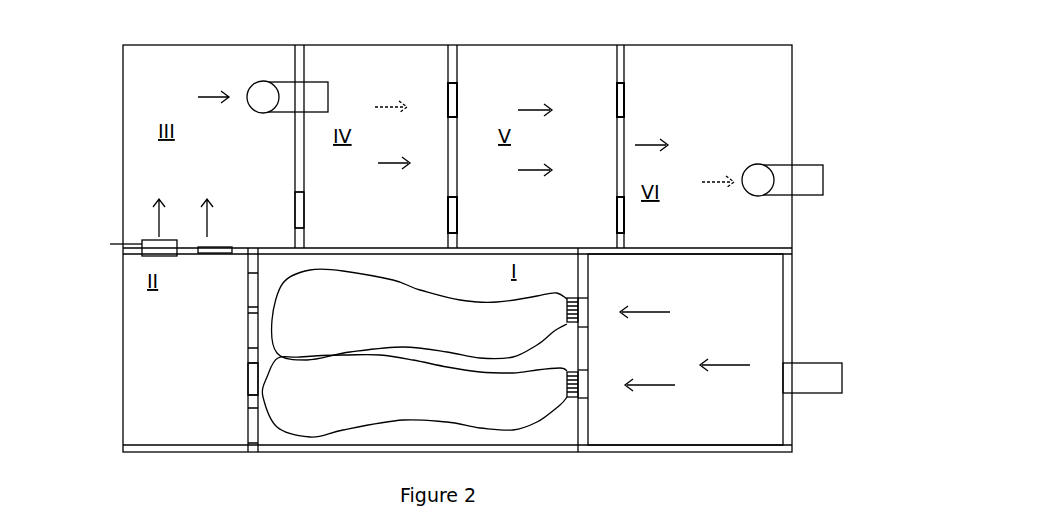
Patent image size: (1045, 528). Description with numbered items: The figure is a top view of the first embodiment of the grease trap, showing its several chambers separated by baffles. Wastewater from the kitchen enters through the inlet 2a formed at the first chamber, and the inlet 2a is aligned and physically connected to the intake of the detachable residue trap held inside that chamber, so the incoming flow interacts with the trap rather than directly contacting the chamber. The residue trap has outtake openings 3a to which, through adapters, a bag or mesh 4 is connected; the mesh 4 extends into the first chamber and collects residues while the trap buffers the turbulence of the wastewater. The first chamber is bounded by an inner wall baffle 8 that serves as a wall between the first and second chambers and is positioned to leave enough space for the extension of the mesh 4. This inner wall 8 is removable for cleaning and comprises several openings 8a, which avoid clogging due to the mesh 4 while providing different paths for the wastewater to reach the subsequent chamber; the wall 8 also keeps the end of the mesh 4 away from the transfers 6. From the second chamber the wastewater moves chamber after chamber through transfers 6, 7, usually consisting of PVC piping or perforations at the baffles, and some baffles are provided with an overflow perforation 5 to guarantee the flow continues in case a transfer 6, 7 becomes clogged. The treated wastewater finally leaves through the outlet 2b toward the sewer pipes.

The inlet 2a is at (796, 371).
The outlet 2b is at (750, 166).
The outtake opening 3a is at (592, 304).
The mesh 4 is at (414, 353).
The overflow perforation 5 is at (445, 86).
The transfer 6 is at (614, 88).
The transfer 7 is at (255, 86).
The inner wall baffle 8 is at (246, 313).
The openings 8a is at (255, 376).